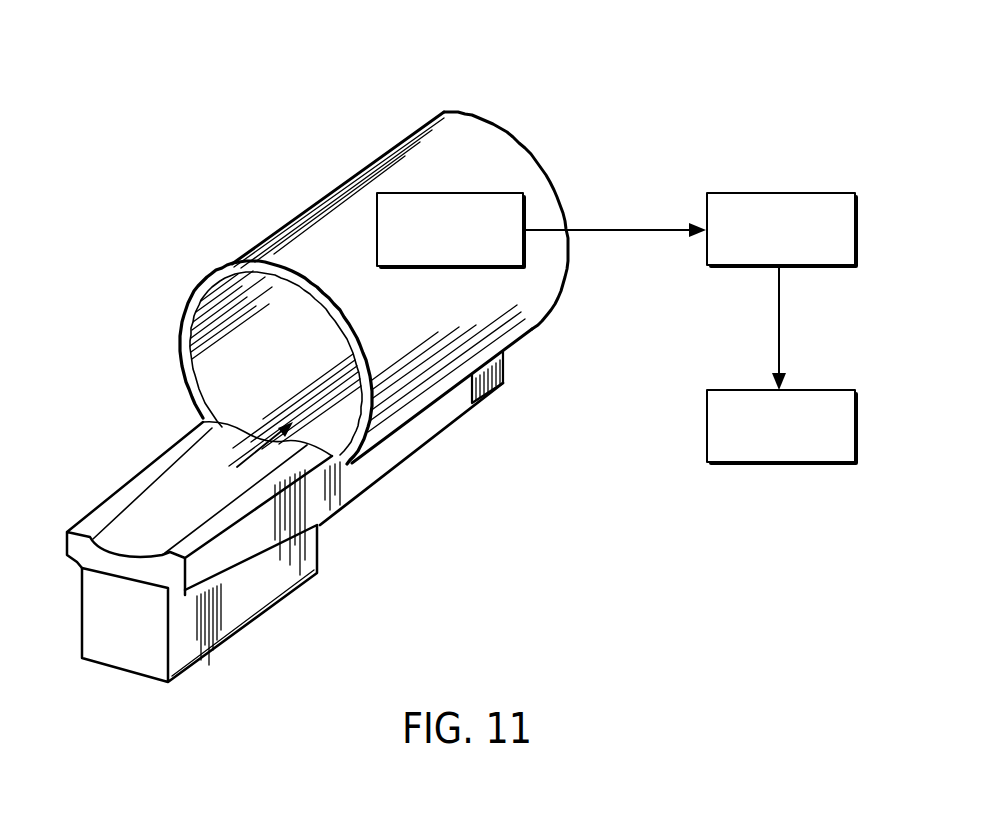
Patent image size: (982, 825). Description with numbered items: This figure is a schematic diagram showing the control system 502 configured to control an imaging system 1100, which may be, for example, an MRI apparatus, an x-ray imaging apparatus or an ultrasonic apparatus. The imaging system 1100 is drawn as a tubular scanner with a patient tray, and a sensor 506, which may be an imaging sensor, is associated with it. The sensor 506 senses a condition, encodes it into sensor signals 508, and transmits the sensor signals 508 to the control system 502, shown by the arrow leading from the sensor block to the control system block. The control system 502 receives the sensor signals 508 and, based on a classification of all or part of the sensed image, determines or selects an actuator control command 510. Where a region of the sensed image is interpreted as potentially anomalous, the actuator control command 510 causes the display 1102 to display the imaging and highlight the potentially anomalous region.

The imaging system 1100 is at (208, 96).
The sensor 506 is at (452, 192).
The sensor signals 508 is at (615, 228).
The control system 502 is at (778, 192).
The actuator control command 510 is at (778, 328).
The display 1102 is at (705, 427).